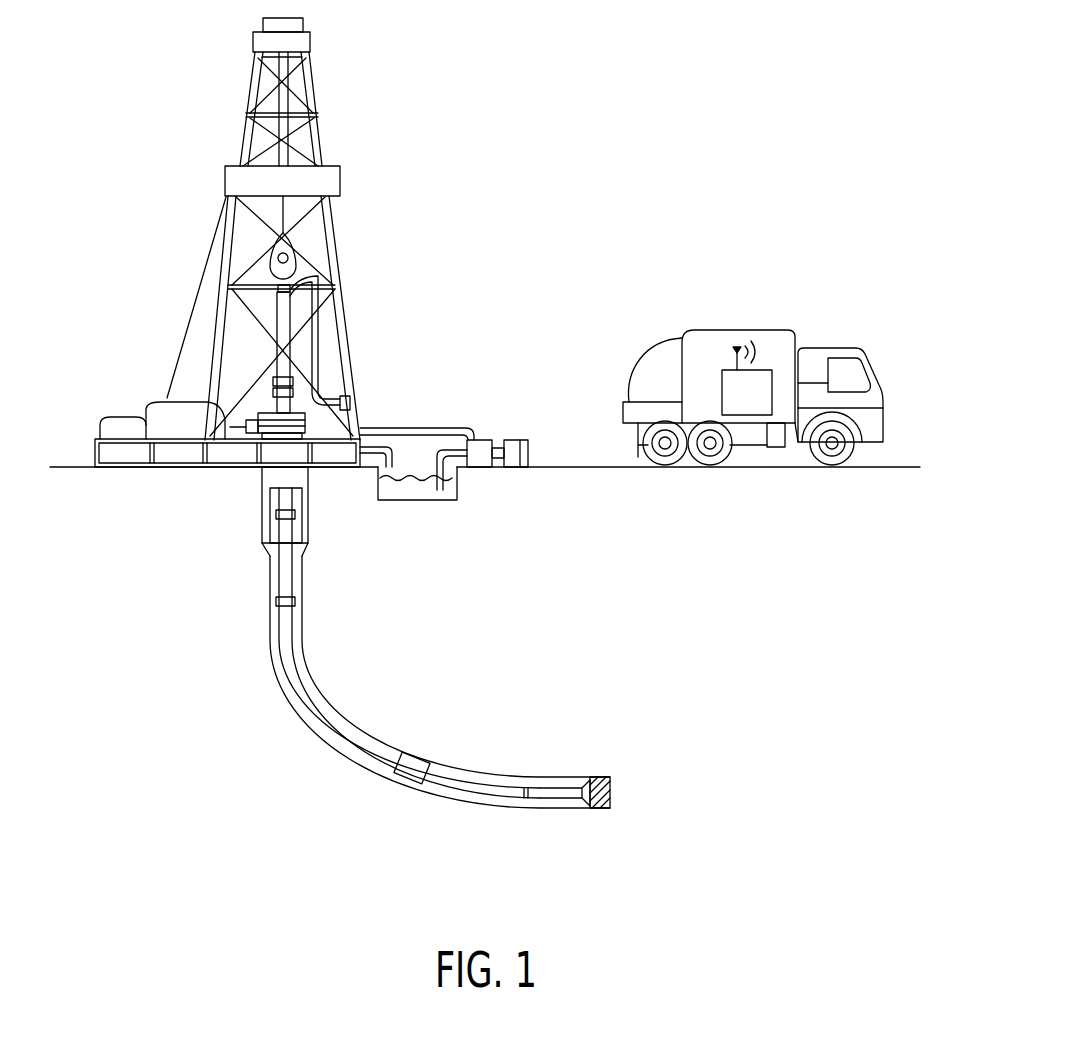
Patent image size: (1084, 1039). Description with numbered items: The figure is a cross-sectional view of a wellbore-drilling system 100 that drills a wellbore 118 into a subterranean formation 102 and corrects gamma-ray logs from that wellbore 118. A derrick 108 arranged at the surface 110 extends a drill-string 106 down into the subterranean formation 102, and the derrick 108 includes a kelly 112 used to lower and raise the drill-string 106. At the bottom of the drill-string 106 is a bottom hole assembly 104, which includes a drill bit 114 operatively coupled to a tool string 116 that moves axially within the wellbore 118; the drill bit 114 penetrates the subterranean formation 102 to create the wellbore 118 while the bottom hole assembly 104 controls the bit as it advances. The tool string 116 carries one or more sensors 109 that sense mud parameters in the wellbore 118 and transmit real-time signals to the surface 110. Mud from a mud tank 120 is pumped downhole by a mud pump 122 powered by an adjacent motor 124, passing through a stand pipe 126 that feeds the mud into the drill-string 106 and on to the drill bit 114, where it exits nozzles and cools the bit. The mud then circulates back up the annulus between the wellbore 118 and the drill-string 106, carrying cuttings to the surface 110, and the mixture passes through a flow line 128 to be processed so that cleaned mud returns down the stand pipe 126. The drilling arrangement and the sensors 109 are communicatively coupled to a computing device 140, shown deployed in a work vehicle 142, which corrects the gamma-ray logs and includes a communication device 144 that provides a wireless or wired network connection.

The wellbore-drilling system 100 is at (532, 236).
The subterranean formation 102 is at (110, 536).
The bottom hole assembly 104 is at (540, 781).
The drill-string 106 is at (291, 650).
The derrick 108 is at (230, 250).
The sensors 109 is at (406, 783).
The surface 110 is at (62, 465).
The kelly 112 is at (292, 261).
The drill bit 114 is at (612, 790).
The tool string 116 is at (583, 765).
The wellbore 118 is at (269, 625).
The mud tank 120 is at (420, 500).
The mud pump 122 is at (483, 440).
The motor 124 is at (524, 440).
The stand pipe 126 is at (323, 350).
The flow line 128 is at (391, 447).
The computing device 140 is at (722, 390).
The work vehicle 142 is at (883, 433).
The communication device 144 is at (747, 348).